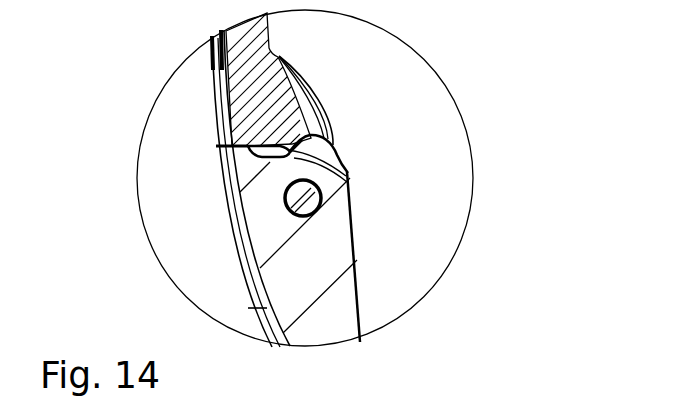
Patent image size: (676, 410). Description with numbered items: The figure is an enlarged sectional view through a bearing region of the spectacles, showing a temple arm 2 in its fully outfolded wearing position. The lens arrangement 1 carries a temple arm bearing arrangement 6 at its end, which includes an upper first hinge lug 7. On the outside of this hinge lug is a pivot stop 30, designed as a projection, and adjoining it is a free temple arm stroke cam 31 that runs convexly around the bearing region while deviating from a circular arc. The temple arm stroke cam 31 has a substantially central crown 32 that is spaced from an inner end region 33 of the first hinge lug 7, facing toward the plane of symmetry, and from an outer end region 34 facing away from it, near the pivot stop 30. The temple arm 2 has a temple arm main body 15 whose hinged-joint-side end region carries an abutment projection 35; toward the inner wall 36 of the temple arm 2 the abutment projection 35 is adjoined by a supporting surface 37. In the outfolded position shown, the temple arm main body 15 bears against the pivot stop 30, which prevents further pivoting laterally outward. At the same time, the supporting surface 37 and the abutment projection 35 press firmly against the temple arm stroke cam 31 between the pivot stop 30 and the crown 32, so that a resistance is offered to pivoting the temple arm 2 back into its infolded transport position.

The lens arrangement 1 is at (198, 241).
The temple arm 2 is at (212, 86).
The temple arm bearing arrangement 6 is at (280, 198).
The first hinge lug 7 is at (278, 174).
The temple arm main body 15 is at (248, 33).
The pivot stop 30 is at (217, 98).
The temple arm stroke cam 31 is at (326, 148).
The crown 32 is at (318, 120).
The inner end region 33 is at (352, 195).
The outer end region 34 is at (218, 158).
The abutment projection 35 is at (349, 178).
The inner wall 36 is at (302, 80).
The supporting surface 37 is at (338, 154).